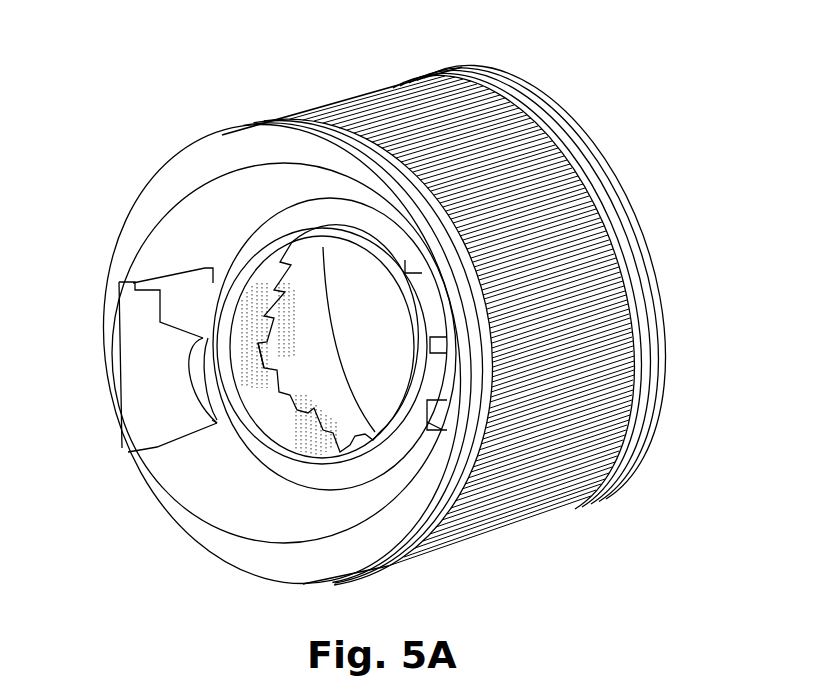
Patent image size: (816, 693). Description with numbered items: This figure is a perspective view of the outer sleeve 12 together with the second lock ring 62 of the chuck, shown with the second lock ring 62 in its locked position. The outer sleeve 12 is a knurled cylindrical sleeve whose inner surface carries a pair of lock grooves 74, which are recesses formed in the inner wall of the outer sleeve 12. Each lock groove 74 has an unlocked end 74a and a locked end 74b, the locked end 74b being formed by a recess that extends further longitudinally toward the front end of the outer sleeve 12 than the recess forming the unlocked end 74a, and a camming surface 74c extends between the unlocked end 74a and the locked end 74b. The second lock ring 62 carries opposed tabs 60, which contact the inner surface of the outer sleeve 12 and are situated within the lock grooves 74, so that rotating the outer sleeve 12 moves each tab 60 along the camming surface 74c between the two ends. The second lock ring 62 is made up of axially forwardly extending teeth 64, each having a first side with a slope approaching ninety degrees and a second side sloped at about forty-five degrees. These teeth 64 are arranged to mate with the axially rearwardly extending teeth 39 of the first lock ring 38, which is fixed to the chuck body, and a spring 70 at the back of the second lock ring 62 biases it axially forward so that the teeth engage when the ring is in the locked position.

The outer sleeve 12 is at (603, 89).
The second lock ring 62 is at (307, 212).
The spring 70 is at (298, 448).
The first lock ring 38 is at (316, 408).
The teeth 39 is at (296, 410).
The teeth 64 is at (262, 323).
The tabs 60 is at (170, 305).
The lock grooves 74 is at (147, 385).
The unlocked end 74a is at (217, 423).
The locked end 74b is at (205, 270).
The camming surface 74c is at (200, 348).